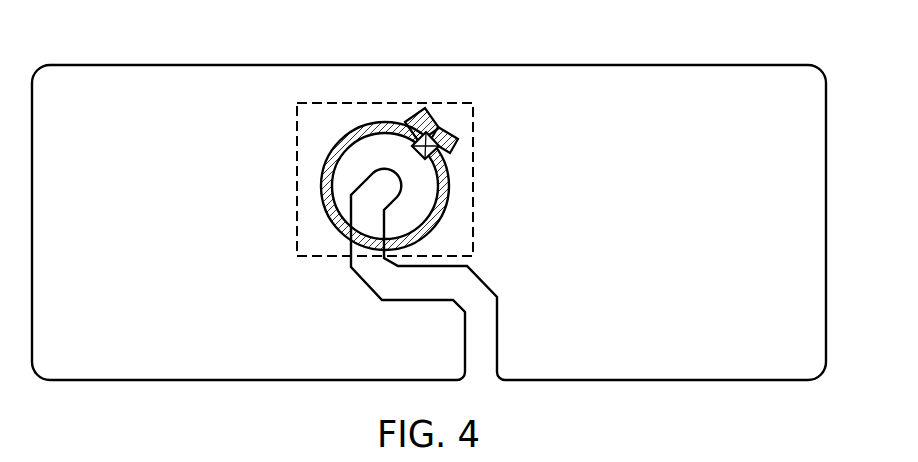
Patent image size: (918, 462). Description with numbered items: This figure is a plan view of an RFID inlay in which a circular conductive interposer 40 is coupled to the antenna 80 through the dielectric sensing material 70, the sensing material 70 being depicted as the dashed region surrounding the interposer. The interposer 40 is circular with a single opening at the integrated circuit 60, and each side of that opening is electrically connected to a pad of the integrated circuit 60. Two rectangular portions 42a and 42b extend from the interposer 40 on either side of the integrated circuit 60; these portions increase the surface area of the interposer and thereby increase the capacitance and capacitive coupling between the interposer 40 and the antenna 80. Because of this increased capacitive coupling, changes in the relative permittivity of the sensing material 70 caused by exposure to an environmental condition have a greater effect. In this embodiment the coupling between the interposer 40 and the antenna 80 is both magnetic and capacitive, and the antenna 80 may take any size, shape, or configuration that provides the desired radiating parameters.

The antenna 80 is at (660, 75).
The sensing material 70 is at (480, 130).
The conductive interposer 40 is at (329, 215).
The rectangular portion 42a is at (422, 123).
The rectangular portion 42b is at (450, 150).
The integrated circuit 60 is at (436, 157).